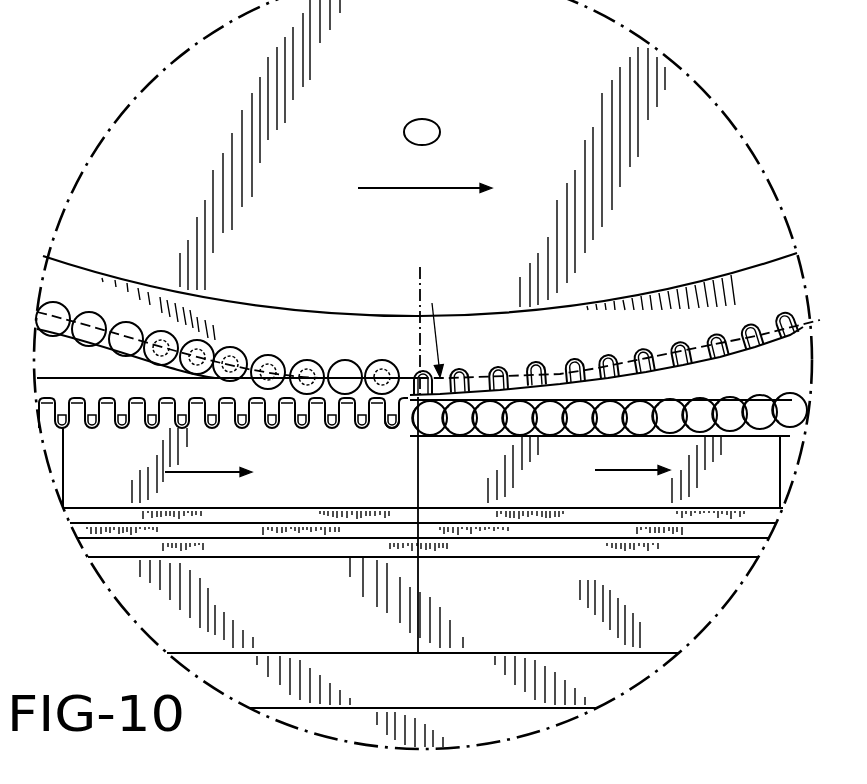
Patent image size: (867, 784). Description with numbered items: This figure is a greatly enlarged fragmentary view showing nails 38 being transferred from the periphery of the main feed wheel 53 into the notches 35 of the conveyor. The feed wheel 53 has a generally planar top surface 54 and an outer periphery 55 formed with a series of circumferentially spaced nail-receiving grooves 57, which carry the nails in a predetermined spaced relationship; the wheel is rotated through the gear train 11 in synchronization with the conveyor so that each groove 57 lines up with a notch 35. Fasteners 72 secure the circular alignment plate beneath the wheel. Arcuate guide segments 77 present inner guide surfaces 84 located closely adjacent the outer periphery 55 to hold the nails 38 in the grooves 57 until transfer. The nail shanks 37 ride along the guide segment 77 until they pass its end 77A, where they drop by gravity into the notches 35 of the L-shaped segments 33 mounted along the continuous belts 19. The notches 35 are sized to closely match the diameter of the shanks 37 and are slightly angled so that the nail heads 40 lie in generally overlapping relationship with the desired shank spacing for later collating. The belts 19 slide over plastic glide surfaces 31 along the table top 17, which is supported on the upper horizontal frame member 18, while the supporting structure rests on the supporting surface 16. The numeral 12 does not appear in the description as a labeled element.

The gear train 11 is at (420, 267).
The radial direction arrow 12 is at (288, 375).
The supporting surface 16 is at (530, 652).
The table top 17 is at (297, 642).
The upper horizontal frame member 18 is at (360, 728).
The continuous belts 19 is at (470, 552).
The glide surfaces 31 is at (137, 598).
The L-shaped segments 33 is at (243, 493).
The notches 35 is at (97, 427).
The shanks 37 is at (238, 350).
The nails 38 is at (393, 352).
The nail heads 40 is at (345, 361).
The main feed wheel 53 is at (722, 194).
The top surface 54 is at (693, 150).
The outer periphery 55 is at (315, 330).
The nail-receiving grooves 57 is at (790, 311).
The fasteners 72 is at (420, 125).
The arcuate guide segments 77 is at (128, 393).
The end 77A is at (378, 428).
The guide surfaces 84 is at (273, 370).